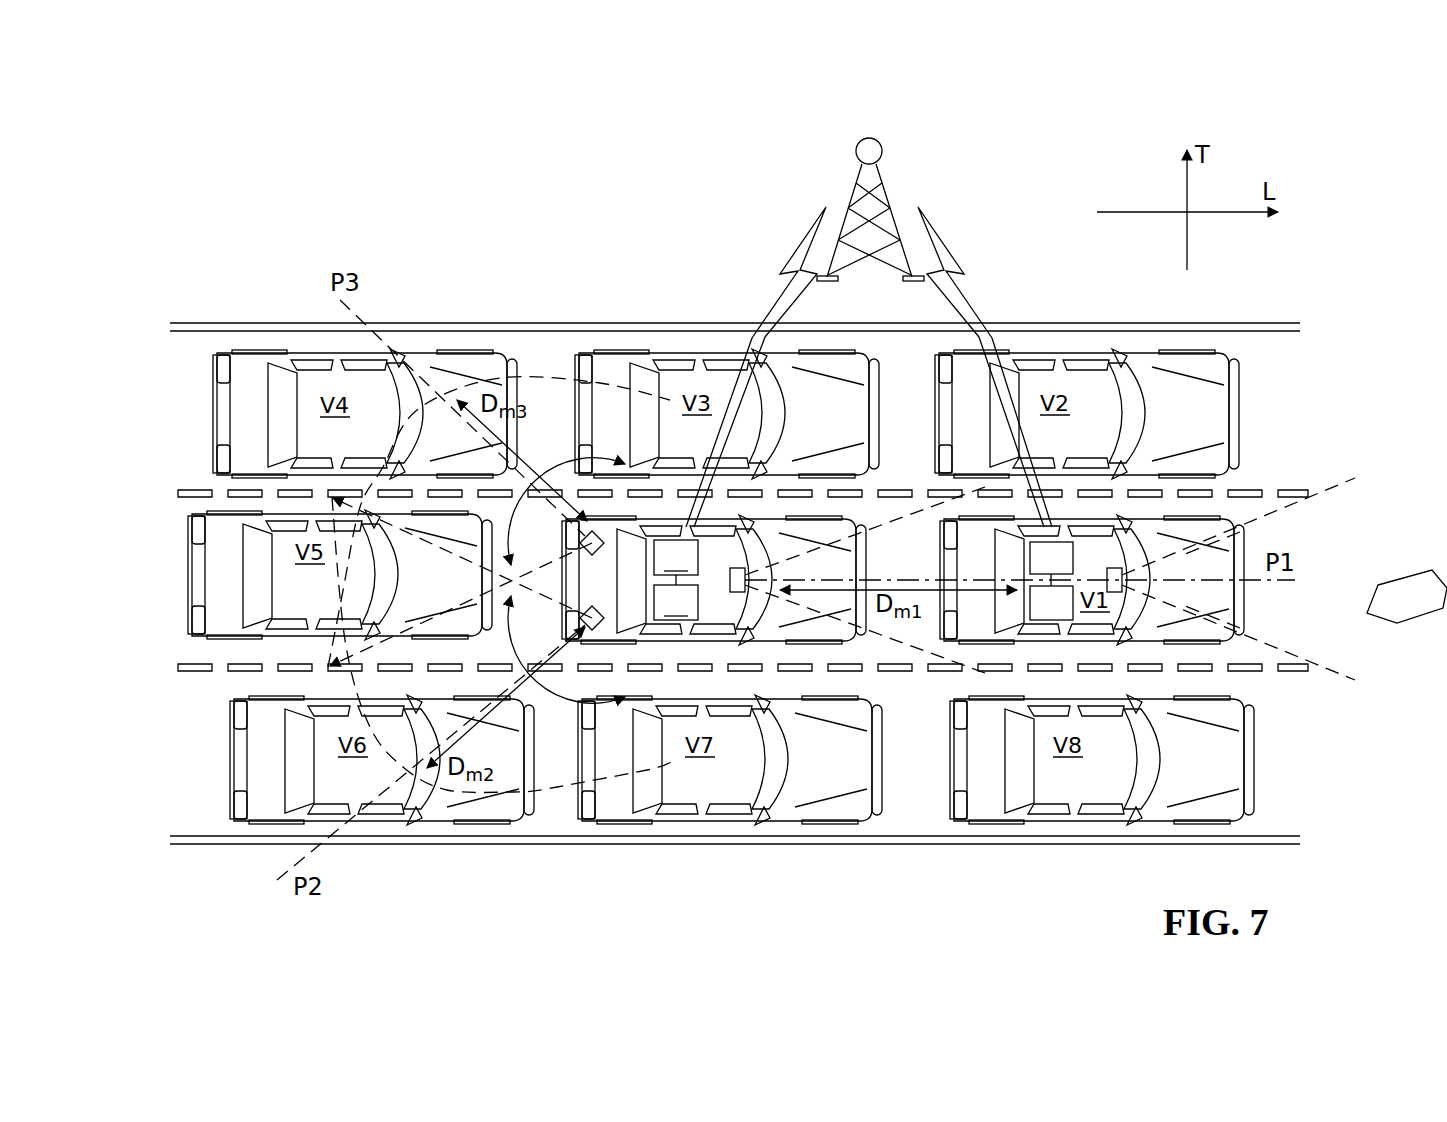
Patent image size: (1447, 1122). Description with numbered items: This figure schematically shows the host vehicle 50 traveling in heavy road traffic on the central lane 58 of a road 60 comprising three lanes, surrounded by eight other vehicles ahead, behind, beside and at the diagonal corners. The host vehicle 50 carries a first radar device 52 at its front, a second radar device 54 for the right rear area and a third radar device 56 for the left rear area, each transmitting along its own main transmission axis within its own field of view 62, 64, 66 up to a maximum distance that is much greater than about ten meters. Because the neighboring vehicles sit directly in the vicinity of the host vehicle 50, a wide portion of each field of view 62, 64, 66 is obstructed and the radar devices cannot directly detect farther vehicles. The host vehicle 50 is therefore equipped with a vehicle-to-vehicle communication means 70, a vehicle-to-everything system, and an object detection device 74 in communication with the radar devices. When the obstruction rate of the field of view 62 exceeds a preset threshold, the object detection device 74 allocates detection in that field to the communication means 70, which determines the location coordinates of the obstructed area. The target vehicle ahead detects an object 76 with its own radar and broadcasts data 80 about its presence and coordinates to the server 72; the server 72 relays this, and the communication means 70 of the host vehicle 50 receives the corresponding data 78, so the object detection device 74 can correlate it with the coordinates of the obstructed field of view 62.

The host vehicle 50 is at (770, 503).
The first radar device 52 is at (742, 594).
The second radar device 54 is at (598, 632).
The third radar device 56 is at (600, 530).
The central lane 58 is at (145, 640).
The road 60 is at (158, 334).
The field of view 62 is at (882, 650).
The field of view 64 is at (539, 800).
The field of view 66 is at (521, 372).
The vehicle-to-vehicle communication means 70 is at (676, 557).
The server 72 is at (908, 155).
The object detection device 74 is at (676, 597).
The object 76 is at (1410, 618).
The data 78 is at (770, 293).
The data 80 is at (965, 293).